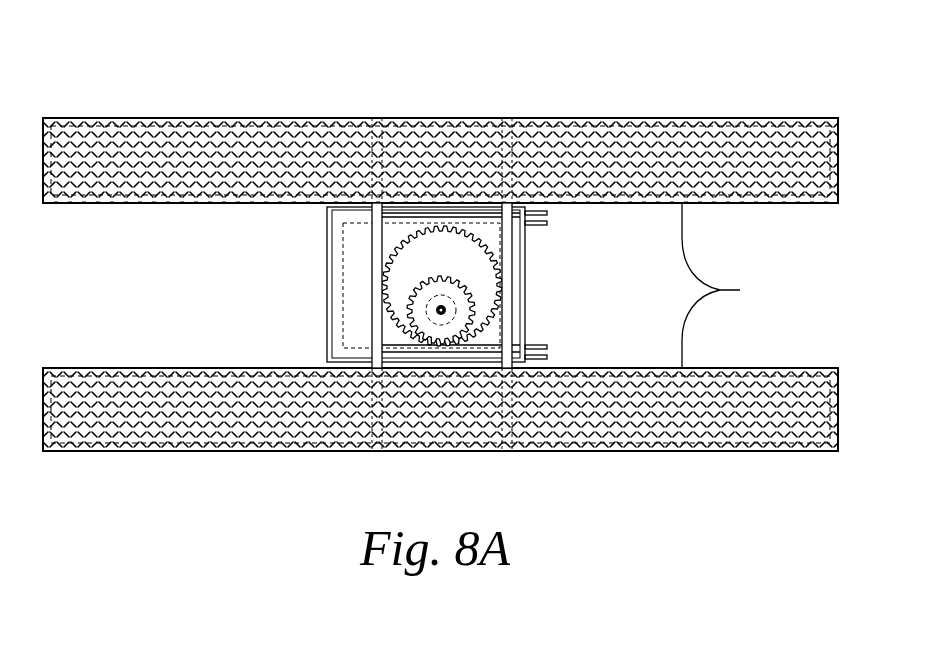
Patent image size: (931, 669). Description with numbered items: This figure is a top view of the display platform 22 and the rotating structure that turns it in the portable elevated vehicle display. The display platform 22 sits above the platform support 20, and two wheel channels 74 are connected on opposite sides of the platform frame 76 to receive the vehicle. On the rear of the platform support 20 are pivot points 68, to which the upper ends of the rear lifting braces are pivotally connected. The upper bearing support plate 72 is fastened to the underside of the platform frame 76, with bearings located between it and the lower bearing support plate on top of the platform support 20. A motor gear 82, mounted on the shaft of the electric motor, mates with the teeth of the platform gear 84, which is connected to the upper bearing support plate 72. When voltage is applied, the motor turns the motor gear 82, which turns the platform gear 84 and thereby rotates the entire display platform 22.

The platform support 20 is at (435, 285).
The display platform 22 is at (642, 100).
The pivot points 68 is at (548, 214).
The upper bearing support plate 72 is at (490, 337).
The wheel channels 74 is at (726, 285).
The platform frame 76 is at (513, 283).
The motor gear 82 is at (447, 277).
The platform gear 84 is at (413, 238).